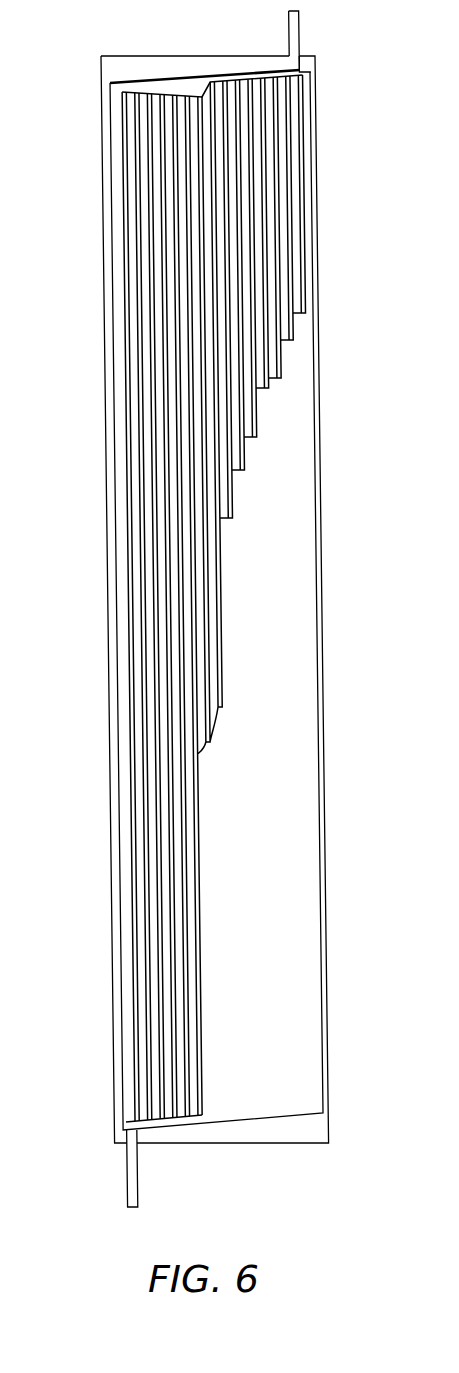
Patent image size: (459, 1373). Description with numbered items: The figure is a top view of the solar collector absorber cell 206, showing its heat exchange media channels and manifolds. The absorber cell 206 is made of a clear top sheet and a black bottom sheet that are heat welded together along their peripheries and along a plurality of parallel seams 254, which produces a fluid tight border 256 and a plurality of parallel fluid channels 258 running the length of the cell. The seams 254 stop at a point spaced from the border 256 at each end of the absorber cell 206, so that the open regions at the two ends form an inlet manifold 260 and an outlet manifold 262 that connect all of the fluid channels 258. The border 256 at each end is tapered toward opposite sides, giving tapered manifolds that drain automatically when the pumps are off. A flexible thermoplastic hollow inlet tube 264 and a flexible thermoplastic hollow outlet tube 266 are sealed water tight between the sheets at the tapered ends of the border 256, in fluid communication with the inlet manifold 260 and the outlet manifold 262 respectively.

The absorber cell 206 is at (325, 585).
The seams 254 is at (147, 93).
The fluid tight border 256 is at (312, 285).
The fluid channels 258 is at (130, 207).
The inlet manifold 260 is at (208, 1118).
The outlet manifold 262 is at (300, 70).
The inlet tube 264 is at (127, 1173).
The outlet tube 266 is at (300, 13).